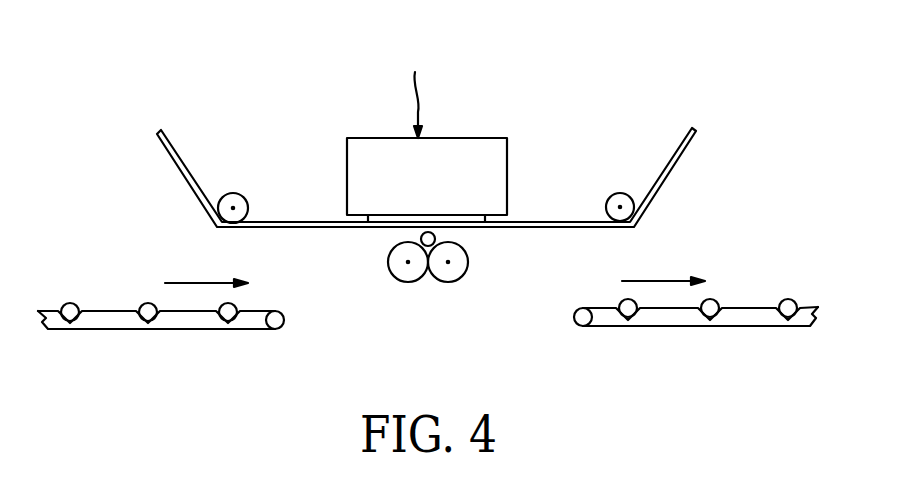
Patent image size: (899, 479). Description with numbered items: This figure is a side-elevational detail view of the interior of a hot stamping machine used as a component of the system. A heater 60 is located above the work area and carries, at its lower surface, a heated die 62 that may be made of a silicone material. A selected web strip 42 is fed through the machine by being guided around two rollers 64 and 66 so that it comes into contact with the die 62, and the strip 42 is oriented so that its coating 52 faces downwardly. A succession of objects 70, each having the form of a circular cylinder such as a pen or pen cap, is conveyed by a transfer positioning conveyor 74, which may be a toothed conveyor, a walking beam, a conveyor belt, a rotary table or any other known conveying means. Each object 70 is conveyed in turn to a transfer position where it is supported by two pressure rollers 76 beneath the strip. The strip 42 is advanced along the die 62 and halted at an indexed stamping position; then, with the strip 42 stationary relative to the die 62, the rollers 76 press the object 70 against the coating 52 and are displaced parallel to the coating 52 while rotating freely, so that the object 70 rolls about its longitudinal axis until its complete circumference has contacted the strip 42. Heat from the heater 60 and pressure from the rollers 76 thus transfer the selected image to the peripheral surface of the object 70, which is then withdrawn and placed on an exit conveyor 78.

The web strip 42 is at (197, 122).
The coating 52 is at (166, 148).
The heater 60 is at (491, 150).
The heated die 62 is at (481, 217).
The roller 64 is at (233, 193).
The roller 66 is at (621, 194).
The object 70 is at (436, 237).
The transfer positioning conveyor 74 is at (103, 330).
The pressure rollers 76 is at (403, 282).
The exit conveyor 78 is at (668, 327).